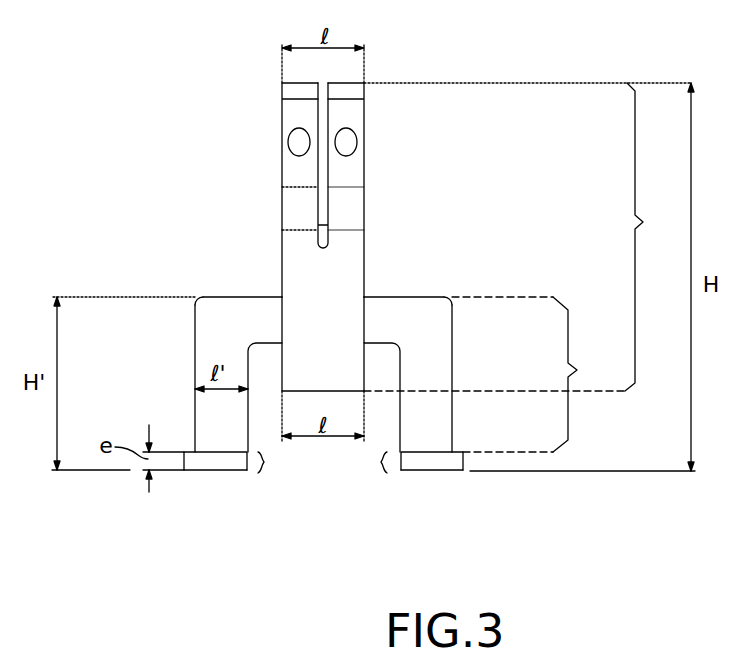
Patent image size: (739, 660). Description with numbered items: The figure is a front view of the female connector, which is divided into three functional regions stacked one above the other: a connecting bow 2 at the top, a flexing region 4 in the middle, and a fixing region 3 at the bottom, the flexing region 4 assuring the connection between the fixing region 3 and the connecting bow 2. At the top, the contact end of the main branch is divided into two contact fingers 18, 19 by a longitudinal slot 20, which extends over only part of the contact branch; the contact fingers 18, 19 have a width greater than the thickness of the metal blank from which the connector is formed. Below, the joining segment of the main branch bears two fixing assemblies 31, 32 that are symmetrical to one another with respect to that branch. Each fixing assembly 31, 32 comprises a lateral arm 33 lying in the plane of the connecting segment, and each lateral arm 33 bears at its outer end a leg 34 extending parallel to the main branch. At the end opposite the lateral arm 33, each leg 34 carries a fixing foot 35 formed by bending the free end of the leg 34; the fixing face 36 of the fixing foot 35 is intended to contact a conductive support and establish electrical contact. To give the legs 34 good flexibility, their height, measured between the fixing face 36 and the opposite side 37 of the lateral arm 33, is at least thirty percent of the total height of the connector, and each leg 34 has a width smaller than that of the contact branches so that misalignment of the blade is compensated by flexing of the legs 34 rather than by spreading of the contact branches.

The connecting bow 2 is at (644, 237).
The fixing region 3 is at (379, 462).
The flexing region 4 is at (574, 374).
The contact finger 18 is at (292, 110).
The contact finger 19 is at (352, 110).
The longitudinal slot 20 is at (325, 178).
The fixing assembly 31 is at (152, 275).
The fixing assembly 32 is at (460, 292).
The lateral arm 33 is at (262, 322).
The leg 34 is at (215, 318).
The fixing foot 35 is at (213, 472).
The fixing face 36 is at (192, 474).
The opposite side of the lateral arm 37 is at (213, 295).